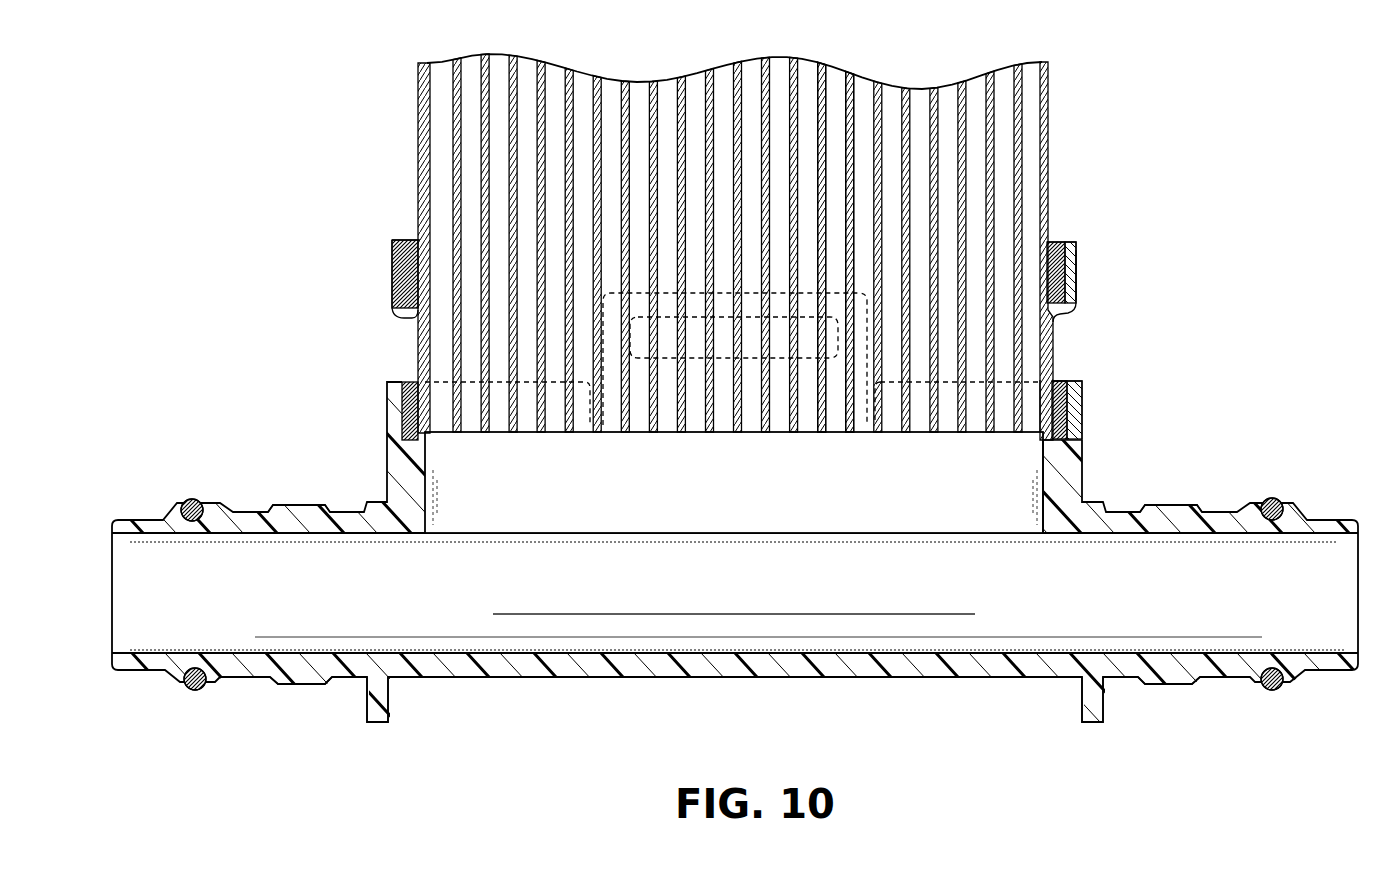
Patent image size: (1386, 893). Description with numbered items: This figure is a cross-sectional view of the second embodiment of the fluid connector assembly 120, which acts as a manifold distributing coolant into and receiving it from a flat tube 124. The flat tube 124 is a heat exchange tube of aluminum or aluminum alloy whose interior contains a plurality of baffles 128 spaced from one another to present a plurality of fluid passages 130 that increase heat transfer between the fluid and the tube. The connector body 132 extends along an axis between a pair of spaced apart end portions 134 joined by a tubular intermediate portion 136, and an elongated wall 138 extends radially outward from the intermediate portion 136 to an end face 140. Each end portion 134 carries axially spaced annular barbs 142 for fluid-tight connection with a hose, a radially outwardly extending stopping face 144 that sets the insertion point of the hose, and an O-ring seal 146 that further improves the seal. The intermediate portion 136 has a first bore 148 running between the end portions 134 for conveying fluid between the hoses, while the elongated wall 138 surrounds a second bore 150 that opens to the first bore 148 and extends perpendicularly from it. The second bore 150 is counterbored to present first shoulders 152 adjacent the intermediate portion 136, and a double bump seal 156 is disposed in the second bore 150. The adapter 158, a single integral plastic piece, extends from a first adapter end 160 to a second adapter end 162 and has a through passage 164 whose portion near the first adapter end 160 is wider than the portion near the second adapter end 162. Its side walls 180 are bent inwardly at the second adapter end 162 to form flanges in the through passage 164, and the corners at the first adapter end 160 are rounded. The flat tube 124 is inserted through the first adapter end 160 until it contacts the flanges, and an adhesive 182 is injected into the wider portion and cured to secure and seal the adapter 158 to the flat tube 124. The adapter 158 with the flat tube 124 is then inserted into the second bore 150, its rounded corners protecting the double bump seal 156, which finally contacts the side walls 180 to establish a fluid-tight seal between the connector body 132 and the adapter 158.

The fluid connector assembly 120 is at (968, 680).
The flat tube 124 is at (1046, 85).
The baffles 128 is at (1018, 63).
The fluid passages 130 is at (890, 95).
The connector body 132 is at (507, 676).
The end portions 134 is at (326, 687).
The intermediate portion 136 is at (835, 665).
The elongated wall 138 is at (1082, 482).
The end face 140 is at (1072, 380).
The annular barbs 142 is at (312, 506).
The stopping face 144 is at (367, 705).
The O-ring seal 146 is at (190, 690).
The first bore 148 is at (708, 601).
The second bore 150 is at (733, 502).
The first shoulders 152 is at (1082, 420).
The double bump seal 156 is at (1060, 380).
The adapter 158 is at (1077, 263).
The first adapter end 160 is at (1043, 460).
The second adapter end 162 is at (1070, 240).
The through passage 164 is at (1038, 392).
The side walls 180 is at (416, 352).
The adhesive 182 is at (1054, 240).